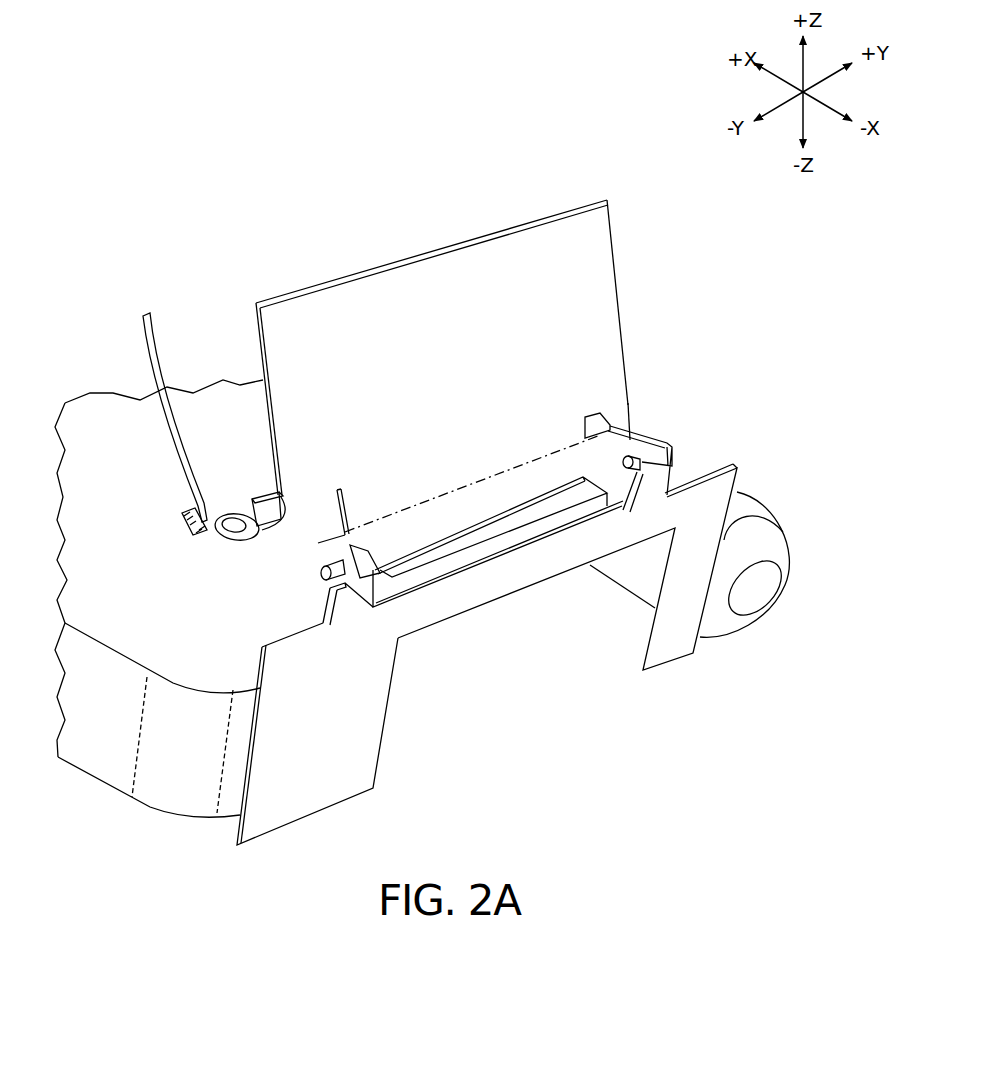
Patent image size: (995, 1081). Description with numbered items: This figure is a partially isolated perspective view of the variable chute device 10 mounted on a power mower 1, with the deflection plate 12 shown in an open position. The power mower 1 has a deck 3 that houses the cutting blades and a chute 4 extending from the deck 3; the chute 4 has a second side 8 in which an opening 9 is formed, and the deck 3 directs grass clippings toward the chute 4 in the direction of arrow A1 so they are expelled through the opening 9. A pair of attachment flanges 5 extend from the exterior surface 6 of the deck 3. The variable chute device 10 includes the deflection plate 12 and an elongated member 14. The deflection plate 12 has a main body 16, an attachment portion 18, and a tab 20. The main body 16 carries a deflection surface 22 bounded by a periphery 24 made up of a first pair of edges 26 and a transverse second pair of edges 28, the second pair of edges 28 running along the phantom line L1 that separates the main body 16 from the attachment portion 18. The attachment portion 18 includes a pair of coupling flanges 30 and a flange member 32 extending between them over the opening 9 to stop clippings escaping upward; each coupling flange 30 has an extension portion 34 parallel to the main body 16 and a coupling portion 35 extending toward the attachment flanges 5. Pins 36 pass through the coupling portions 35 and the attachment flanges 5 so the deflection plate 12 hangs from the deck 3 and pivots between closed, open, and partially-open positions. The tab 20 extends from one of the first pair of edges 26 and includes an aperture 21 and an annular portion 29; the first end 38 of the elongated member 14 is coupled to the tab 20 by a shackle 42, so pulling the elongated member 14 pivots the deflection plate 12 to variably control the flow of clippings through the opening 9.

The power mower 1 is at (63, 295).
The deck 3 is at (95, 427).
The chute 4 is at (485, 672).
The attachment flanges 5 is at (352, 548).
The exterior surface 6 is at (197, 673).
The second side 8 is at (267, 820).
The opening 9 is at (412, 773).
The variable chute device 10 is at (352, 236).
The deflection plate 12 is at (436, 304).
The elongated member 14 is at (143, 342).
The main body 16 is at (432, 265).
The attachment portion 18 is at (317, 542).
The tab 20 is at (262, 492).
The aperture 21 is at (284, 505).
The deflection surface 22 is at (480, 410).
The periphery 24 is at (254, 299).
The first pair of edges 26 is at (258, 352).
The second pair of edges 28 is at (478, 237).
The annular portion 29 is at (233, 512).
The coupling flanges 30 is at (667, 440).
The flange member 32 is at (433, 545).
The extension portion 34 is at (585, 440).
The coupling portion 35 is at (616, 412).
The pins 36 is at (617, 462).
The first end 38 is at (215, 510).
The shackle 42 is at (182, 514).
The phantom line L1 is at (412, 476).
The arrow A1 is at (475, 635).